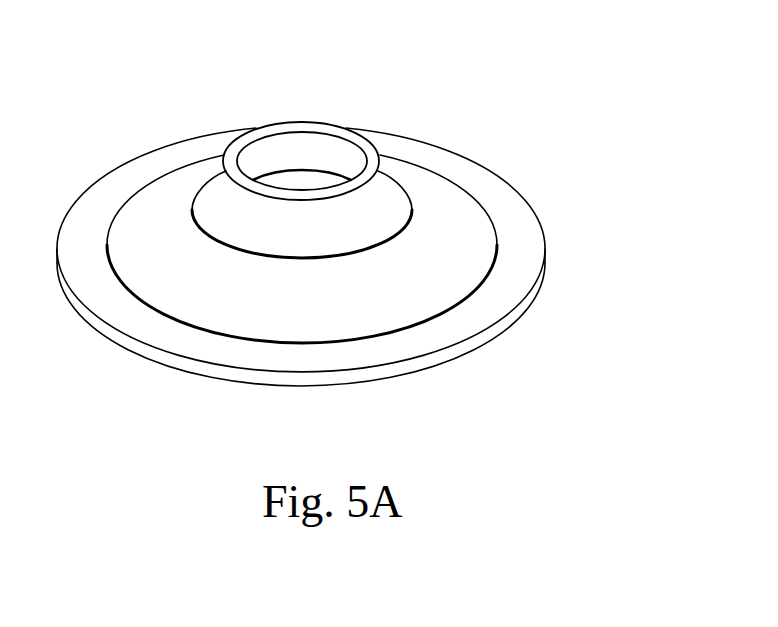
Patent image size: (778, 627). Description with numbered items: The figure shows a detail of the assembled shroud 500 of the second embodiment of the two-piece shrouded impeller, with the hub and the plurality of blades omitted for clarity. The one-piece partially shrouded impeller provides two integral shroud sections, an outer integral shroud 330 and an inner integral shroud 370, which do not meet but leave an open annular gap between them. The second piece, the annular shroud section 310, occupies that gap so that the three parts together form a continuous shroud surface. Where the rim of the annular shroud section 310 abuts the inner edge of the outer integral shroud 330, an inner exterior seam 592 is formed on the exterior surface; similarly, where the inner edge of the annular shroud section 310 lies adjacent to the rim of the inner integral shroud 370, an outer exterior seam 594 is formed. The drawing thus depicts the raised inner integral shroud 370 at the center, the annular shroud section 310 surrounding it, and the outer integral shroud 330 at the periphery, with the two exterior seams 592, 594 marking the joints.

The assembled shroud 500 is at (157, 115).
The inner integral shroud 370 is at (383, 185).
The inner exterior seam 592 is at (410, 192).
The annular shroud section 310 is at (455, 225).
The outer exterior seam 594 is at (495, 267).
The outer integral shroud 330 is at (485, 308).